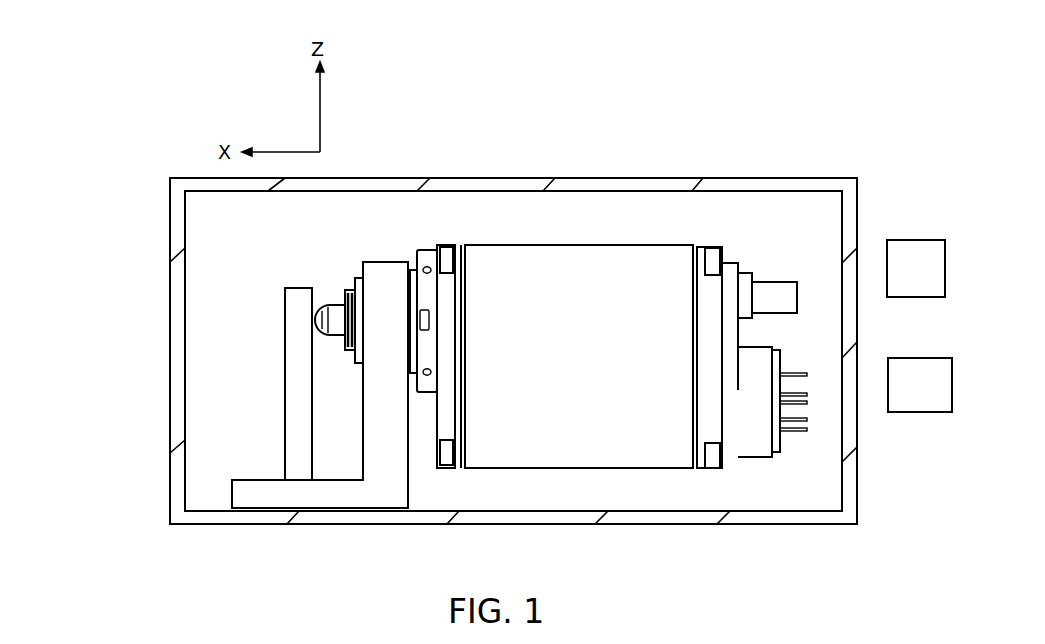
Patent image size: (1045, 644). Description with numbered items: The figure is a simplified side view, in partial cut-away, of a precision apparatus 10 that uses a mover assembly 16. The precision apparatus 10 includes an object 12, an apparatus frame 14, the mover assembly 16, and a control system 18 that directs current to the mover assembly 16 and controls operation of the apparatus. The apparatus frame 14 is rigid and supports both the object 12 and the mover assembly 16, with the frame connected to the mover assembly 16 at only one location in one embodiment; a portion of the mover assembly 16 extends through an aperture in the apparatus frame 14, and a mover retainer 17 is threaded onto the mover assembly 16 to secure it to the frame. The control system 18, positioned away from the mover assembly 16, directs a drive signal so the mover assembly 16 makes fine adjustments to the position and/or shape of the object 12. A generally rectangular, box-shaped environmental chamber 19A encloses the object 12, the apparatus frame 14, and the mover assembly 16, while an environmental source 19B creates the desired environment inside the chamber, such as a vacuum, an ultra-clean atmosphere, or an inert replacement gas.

The precision apparatus 10 is at (153, 230).
The object 12 is at (297, 395).
The apparatus frame 14 is at (247, 495).
The mover assembly 16 is at (575, 280).
The mover retainer 17 is at (355, 358).
The control system 18 is at (932, 397).
The environmental chamber 19A is at (847, 225).
The environmental source 19B is at (935, 280).